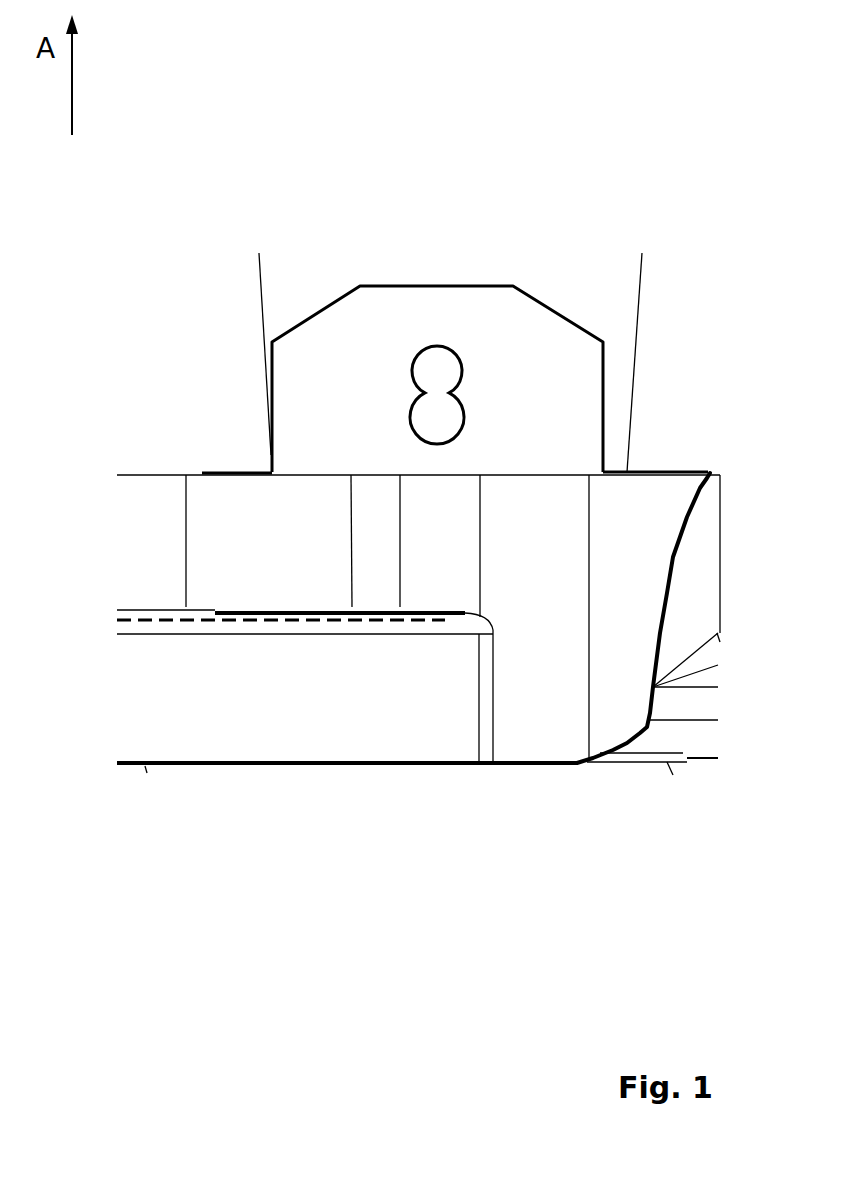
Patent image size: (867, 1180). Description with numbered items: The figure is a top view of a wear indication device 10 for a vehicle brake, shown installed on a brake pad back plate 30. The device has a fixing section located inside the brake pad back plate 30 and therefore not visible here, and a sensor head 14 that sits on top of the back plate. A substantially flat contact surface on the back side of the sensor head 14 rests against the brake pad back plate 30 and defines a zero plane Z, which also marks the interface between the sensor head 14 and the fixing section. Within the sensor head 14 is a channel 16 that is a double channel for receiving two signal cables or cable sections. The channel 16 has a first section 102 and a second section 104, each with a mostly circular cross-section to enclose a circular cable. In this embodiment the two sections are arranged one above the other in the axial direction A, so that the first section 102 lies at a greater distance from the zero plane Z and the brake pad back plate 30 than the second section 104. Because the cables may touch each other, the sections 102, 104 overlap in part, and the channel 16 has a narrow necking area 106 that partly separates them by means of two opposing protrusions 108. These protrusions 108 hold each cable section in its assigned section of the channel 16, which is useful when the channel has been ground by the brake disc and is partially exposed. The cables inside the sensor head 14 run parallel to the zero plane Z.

The wear indication device 10 is at (633, 222).
The sensor head 14 is at (603, 317).
The channel 16 is at (513, 397).
The brake pad back plate 30 is at (418, 575).
The first section 102 is at (428, 368).
The second section 104 is at (442, 420).
The necking area 106 is at (463, 393).
The protrusions 108 is at (420, 395).
The zero plane Z is at (675, 472).